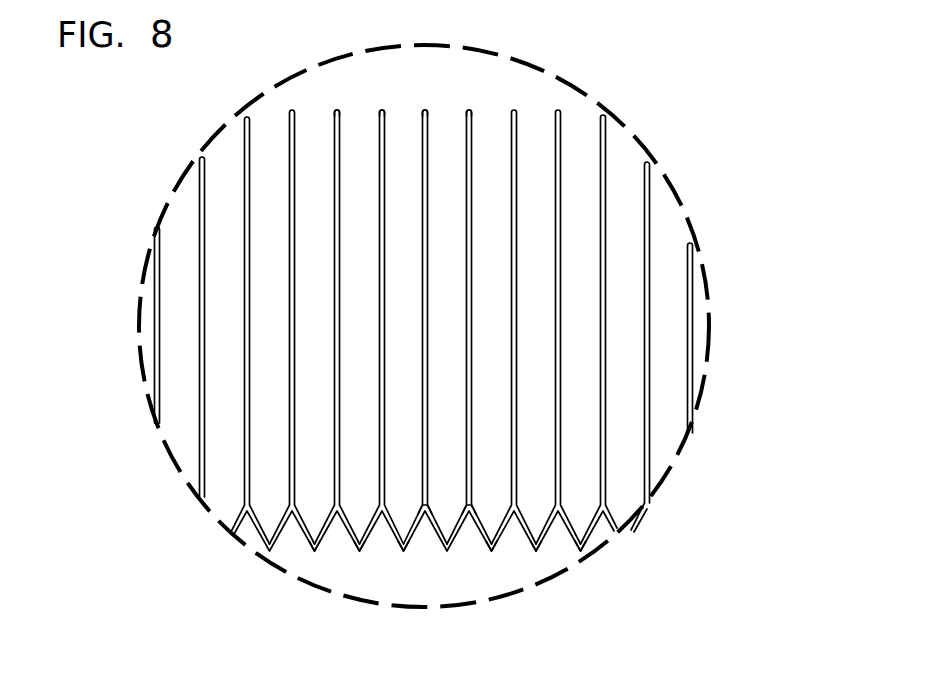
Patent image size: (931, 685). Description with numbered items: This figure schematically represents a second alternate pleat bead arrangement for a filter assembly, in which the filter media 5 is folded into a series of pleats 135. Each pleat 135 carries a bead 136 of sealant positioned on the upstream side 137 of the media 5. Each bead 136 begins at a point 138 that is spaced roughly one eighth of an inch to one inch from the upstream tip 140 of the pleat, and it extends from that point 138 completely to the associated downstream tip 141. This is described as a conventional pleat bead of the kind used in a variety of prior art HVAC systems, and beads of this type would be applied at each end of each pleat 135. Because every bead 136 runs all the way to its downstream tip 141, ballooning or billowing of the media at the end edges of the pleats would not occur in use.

The media 5 is at (577, 299).
The pleat 135 is at (490, 550).
The bead 136 is at (470, 297).
The upstream side 137 is at (392, 535).
The point 138 is at (423, 510).
The upstream tip 140 is at (312, 548).
The downstream tip 141 is at (337, 110).